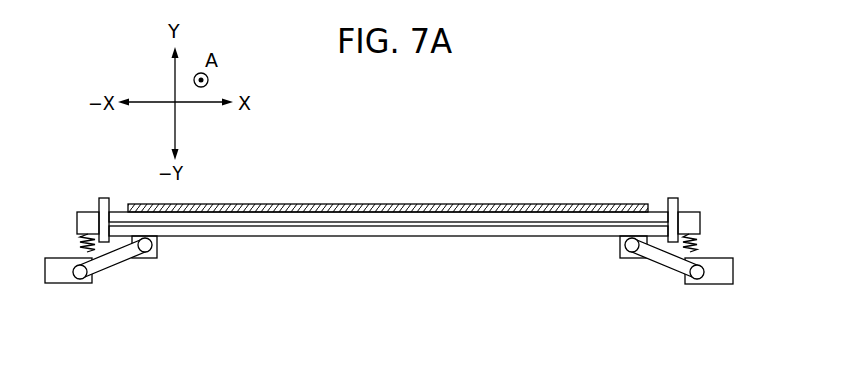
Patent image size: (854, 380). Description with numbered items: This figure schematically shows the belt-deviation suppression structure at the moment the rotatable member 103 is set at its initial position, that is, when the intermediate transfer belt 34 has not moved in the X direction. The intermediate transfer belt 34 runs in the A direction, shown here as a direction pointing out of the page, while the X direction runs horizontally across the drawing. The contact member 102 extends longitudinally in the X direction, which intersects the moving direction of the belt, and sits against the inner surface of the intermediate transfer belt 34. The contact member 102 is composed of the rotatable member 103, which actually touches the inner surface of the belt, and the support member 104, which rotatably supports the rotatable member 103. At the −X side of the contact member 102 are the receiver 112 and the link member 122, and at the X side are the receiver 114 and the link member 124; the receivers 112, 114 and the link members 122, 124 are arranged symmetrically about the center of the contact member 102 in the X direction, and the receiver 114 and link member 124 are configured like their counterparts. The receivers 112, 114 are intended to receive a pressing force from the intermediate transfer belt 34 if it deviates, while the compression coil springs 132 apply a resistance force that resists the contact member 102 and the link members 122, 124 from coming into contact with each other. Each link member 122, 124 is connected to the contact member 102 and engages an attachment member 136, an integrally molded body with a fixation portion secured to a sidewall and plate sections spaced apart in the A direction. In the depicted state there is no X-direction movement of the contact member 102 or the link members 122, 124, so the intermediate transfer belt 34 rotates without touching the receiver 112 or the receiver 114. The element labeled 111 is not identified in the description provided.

The intermediate transfer belt 34 is at (392, 204).
The contact member 102 is at (388, 256).
The rotatable member 103 is at (322, 218).
The support member 104 is at (318, 231).
The holding member 111 is at (86, 218).
The receiver 112 is at (104, 197).
The receiver 114 is at (672, 197).
The link member 122 is at (117, 268).
The link member 124 is at (661, 268).
The compression coil spring 132 is at (79, 244).
The attachment member 136 is at (67, 280).